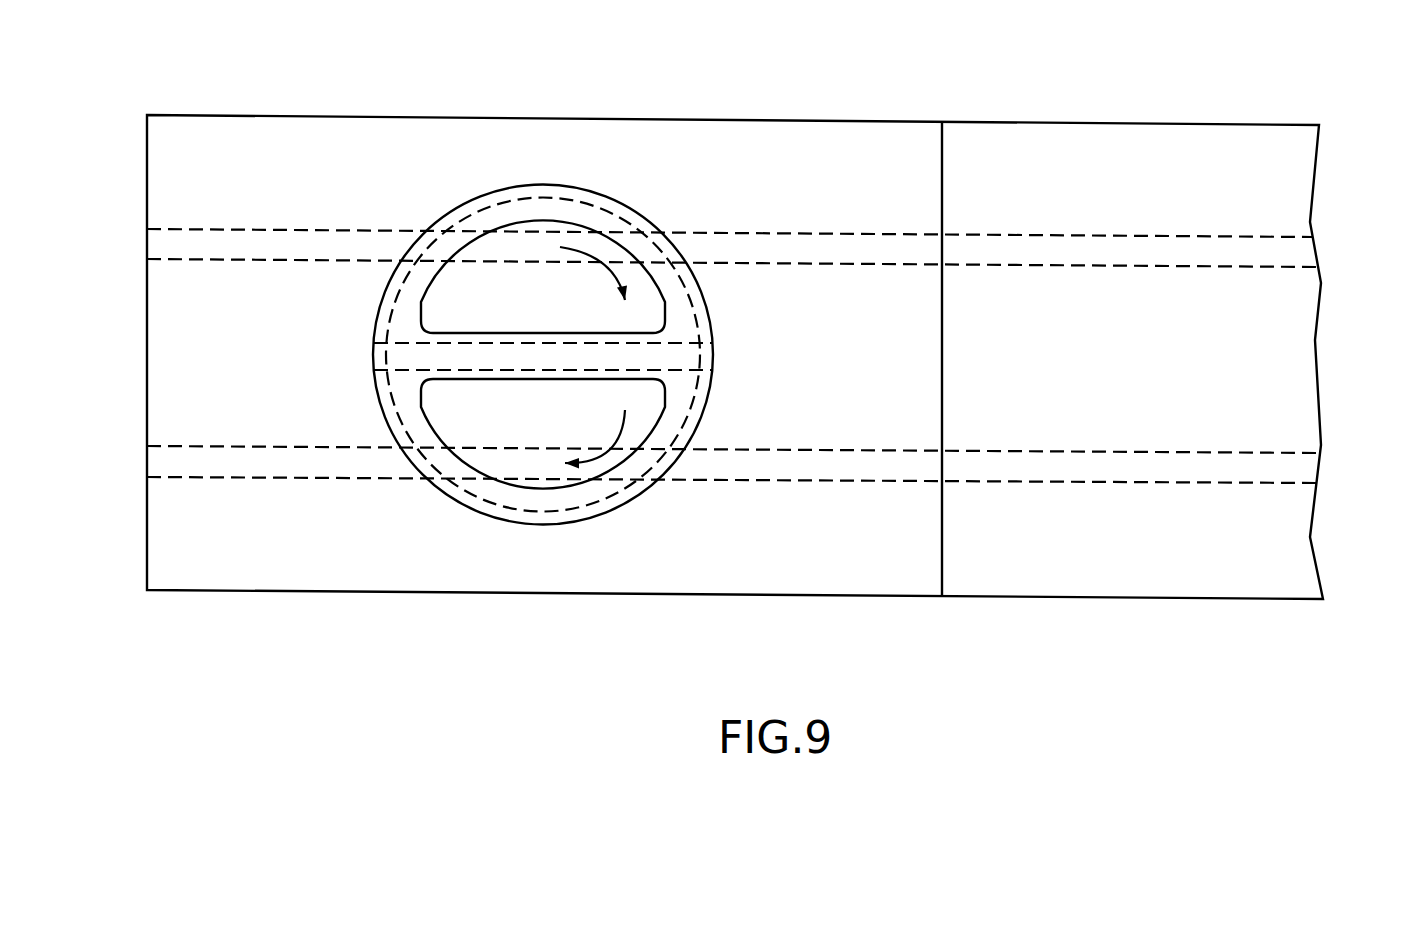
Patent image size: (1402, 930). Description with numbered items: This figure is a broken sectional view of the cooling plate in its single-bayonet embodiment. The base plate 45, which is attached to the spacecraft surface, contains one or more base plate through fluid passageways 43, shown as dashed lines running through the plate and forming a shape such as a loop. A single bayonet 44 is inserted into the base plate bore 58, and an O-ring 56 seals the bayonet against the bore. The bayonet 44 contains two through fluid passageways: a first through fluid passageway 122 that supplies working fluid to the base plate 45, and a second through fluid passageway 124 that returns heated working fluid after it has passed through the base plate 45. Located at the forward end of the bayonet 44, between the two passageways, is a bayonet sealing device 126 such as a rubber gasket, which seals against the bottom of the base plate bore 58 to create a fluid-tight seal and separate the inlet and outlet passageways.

The base plate 45 is at (1173, 152).
The base plate through fluid passageways 43 is at (1300, 252).
The O-ring 56 is at (538, 190).
The base plate bore 58 is at (557, 525).
The bayonet 44 is at (521, 353).
The first through fluid passageway 122 is at (438, 272).
The second through fluid passageway 124 is at (432, 430).
The bayonet sealing device 126 is at (680, 355).